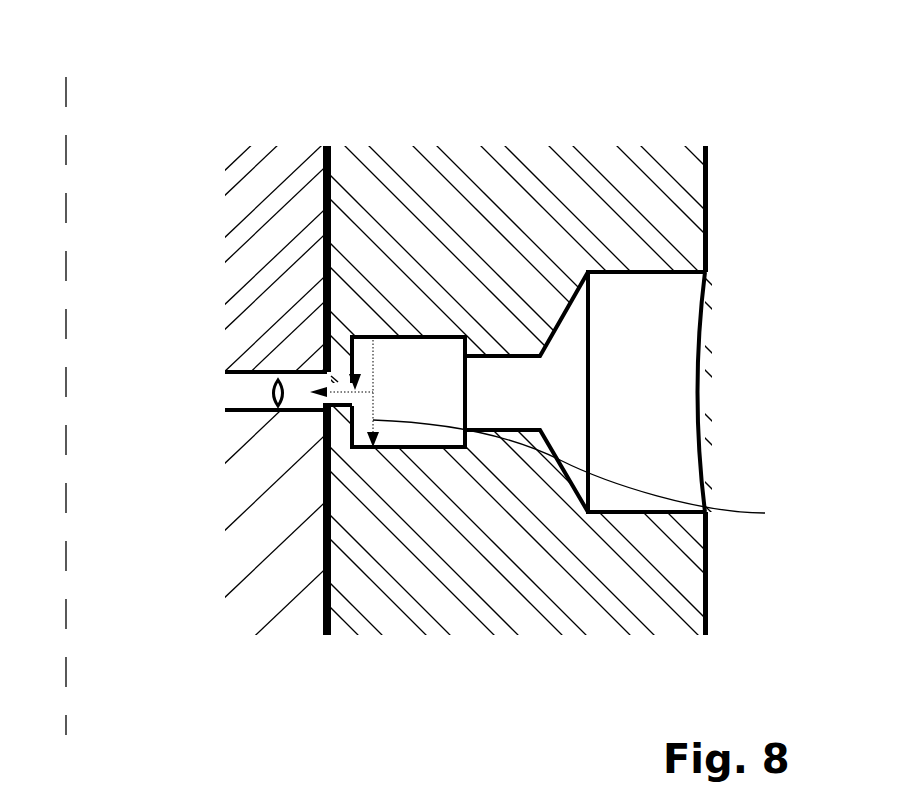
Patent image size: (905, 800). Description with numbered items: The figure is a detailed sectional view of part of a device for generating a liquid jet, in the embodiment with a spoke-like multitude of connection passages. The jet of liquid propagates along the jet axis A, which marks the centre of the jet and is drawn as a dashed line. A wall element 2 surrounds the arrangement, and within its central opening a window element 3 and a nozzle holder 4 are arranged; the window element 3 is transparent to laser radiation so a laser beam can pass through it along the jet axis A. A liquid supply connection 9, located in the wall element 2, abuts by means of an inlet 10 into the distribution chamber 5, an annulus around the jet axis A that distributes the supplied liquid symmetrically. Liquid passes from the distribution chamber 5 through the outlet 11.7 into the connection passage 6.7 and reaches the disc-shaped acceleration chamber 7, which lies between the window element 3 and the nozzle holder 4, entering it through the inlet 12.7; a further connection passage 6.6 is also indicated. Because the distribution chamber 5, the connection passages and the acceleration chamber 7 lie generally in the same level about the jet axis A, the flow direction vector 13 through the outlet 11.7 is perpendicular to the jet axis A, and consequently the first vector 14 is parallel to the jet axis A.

The jet axis A is at (66, 77).
The wall element 2 is at (613, 208).
The window element 3 is at (250, 160).
The nozzle holder 4 is at (235, 573).
The distribution chamber 5 is at (436, 346).
The connection passage 6.6 is at (280, 402).
The connection passage 6.7 is at (338, 382).
The acceleration chamber 7 is at (240, 393).
The liquid supply connection 9 is at (567, 393).
The inlet 10 is at (466, 377).
The outlet 11.7 is at (356, 372).
The inlet 12.7 is at (325, 390).
The flow direction vector 13 is at (348, 395).
The first vector 14 is at (594, 474).